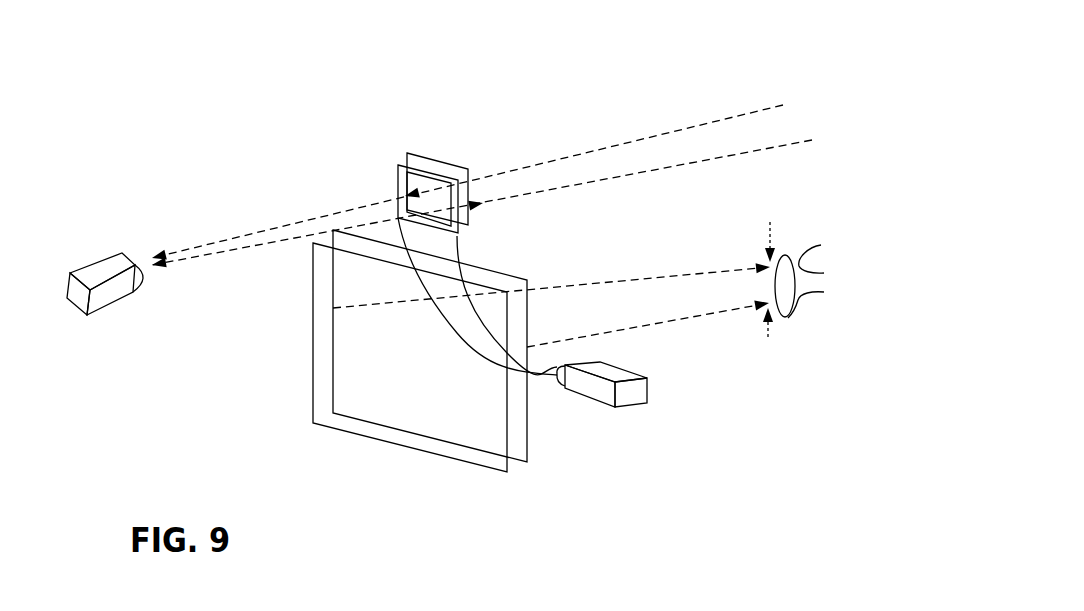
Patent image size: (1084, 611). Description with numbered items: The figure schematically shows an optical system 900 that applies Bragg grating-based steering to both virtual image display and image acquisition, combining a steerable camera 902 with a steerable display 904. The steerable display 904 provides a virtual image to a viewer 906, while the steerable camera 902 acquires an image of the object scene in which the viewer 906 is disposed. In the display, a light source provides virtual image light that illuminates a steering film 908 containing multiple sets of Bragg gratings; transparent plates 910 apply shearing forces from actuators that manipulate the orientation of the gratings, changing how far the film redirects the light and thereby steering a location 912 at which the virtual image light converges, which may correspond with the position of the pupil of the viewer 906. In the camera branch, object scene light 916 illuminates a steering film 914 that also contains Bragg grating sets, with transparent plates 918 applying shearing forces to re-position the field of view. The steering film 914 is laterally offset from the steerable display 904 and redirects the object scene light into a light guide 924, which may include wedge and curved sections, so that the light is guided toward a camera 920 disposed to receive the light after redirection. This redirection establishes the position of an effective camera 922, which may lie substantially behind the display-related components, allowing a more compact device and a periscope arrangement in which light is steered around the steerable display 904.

The optical system 900 is at (763, 41).
The steerable camera 902 is at (668, 402).
The steerable display 904 is at (551, 434).
The viewer 906 is at (822, 276).
The steering film 908 is at (333, 326).
The transparent plates 910 is at (313, 390).
The location 912 is at (790, 212).
The steering film 914 is at (398, 190).
The object scene light 916 is at (598, 152).
The transparent plates 918 is at (425, 152).
The camera 920 is at (602, 406).
The effective camera 922 is at (121, 300).
The light guide 924 is at (447, 326).